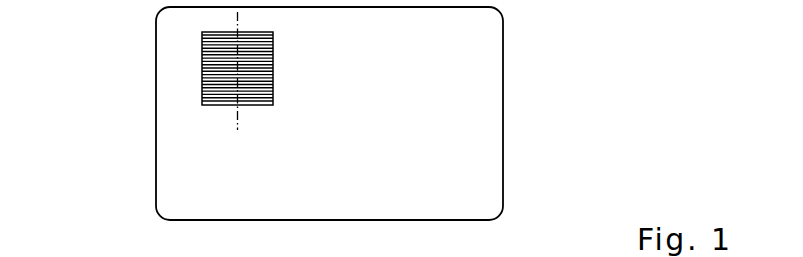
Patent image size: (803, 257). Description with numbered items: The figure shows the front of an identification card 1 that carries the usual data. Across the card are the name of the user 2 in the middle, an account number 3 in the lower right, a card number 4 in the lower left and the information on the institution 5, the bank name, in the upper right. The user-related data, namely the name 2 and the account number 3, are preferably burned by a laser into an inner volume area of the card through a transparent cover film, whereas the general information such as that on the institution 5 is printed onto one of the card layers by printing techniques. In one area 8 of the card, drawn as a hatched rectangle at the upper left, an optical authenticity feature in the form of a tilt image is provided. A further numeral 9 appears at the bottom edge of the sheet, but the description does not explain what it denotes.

The identification card 1 is at (367, 110).
The name of the user 2 is at (245, 22).
The account number 3 is at (492, 192).
The card number 4 is at (178, 191).
The information on the institution 5 is at (481, 71).
The area 8 is at (214, 59).
The card region 9 is at (328, 250).